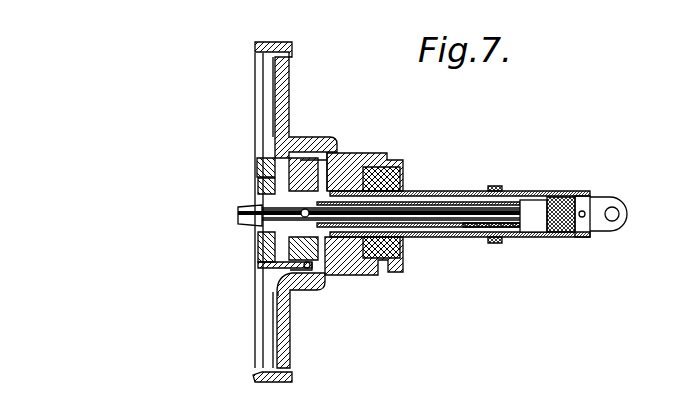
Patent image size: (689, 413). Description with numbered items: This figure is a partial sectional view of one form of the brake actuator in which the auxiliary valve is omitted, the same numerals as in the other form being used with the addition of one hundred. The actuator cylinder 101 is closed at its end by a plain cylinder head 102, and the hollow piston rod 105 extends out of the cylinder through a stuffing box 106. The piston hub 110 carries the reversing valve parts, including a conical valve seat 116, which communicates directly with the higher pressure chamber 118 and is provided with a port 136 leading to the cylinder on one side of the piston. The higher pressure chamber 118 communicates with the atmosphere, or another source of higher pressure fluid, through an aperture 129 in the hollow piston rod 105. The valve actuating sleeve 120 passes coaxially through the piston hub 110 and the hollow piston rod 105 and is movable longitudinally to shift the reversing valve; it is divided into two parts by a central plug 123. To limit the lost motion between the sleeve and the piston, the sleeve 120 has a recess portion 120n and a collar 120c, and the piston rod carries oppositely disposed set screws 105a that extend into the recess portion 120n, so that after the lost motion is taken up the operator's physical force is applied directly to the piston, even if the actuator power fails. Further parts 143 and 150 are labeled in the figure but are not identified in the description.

The actuator cylinder 101 is at (265, 50).
The cylinder head 102 is at (288, 101).
The hollow piston rod 105 is at (428, 191).
The set screw 105a is at (492, 187).
The stuffing box 106 is at (370, 273).
The piston hub 110 is at (340, 145).
The valve seat 116 is at (293, 284).
The higher pressure chamber 118 is at (323, 283).
The valve actuating sleeve 120 is at (262, 246).
The collar 120c is at (525, 238).
The recess portion 120n is at (485, 238).
The central plug 123 is at (240, 213).
The aperture 129 is at (582, 210).
The port 136 is at (258, 143).
The hub 143 is at (303, 142).
The washer 150 is at (262, 187).